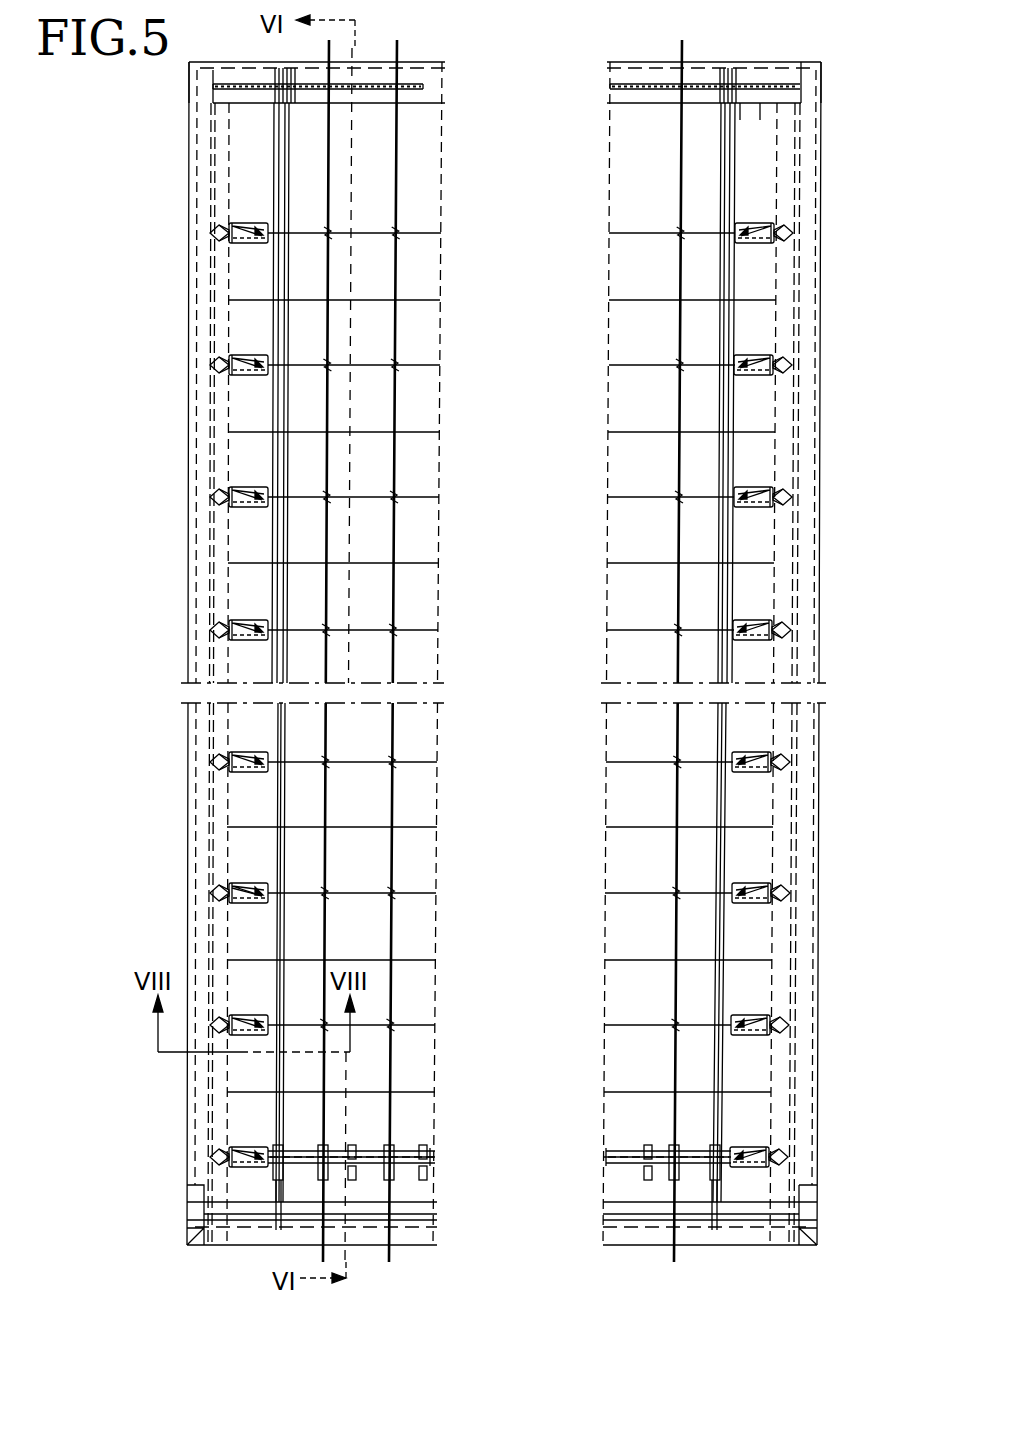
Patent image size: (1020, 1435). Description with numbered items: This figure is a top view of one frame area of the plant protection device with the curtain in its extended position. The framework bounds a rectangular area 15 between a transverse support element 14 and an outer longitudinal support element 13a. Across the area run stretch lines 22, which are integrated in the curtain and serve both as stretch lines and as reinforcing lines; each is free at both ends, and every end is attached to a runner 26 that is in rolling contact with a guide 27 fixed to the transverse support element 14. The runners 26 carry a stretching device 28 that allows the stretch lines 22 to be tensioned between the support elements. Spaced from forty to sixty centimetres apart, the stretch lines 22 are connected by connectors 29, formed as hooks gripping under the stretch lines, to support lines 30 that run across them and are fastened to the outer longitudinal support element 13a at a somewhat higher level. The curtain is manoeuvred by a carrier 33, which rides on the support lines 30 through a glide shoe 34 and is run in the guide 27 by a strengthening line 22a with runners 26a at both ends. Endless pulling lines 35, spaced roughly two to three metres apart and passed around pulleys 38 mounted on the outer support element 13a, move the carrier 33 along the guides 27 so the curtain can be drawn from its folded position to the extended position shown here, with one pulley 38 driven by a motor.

The outer longitudinal support element 13a is at (401, 62).
The transverse support element 14 is at (205, 342).
The rectangular area 15 is at (757, 122).
The stretch line 22 is at (352, 432).
The strengthening line 22a is at (265, 1145).
The runner 26 is at (250, 360).
The runner 26a is at (770, 1150).
The guide 27 is at (222, 460).
The stretching device 28 is at (243, 905).
The connector 29 is at (392, 360).
The support line 30 is at (422, 143).
The carrier 33 is at (600, 1155).
The glide shoe 34 is at (389, 1148).
The endless pulling line 35 is at (286, 180).
The pulley 38 is at (608, 74).